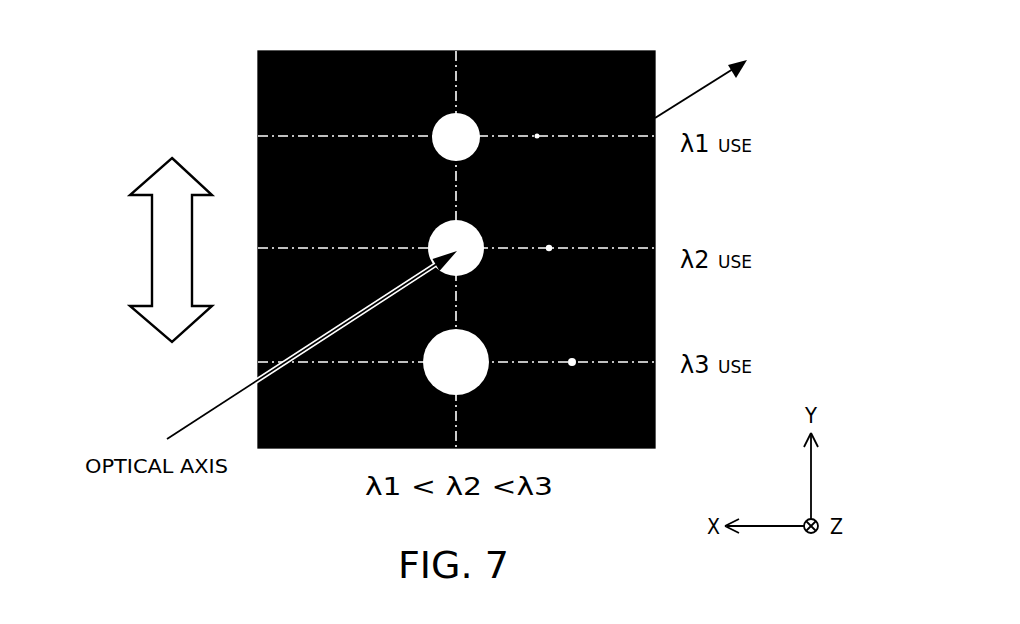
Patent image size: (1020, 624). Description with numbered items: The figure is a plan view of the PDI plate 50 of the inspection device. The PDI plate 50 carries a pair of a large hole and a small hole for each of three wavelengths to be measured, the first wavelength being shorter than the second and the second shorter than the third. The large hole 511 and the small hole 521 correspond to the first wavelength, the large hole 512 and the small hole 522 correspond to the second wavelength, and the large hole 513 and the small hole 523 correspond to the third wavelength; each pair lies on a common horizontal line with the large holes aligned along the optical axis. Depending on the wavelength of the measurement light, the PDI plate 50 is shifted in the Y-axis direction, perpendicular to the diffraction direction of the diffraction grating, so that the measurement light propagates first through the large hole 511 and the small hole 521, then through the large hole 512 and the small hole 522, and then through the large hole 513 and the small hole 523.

The PDI plate 50 is at (643, 42).
The large hole 511 is at (481, 103).
The large hole 512 is at (481, 210).
The large hole 513 is at (492, 323).
The small hole 521 is at (551, 117).
The small hole 522 is at (566, 232).
The small hole 523 is at (586, 344).